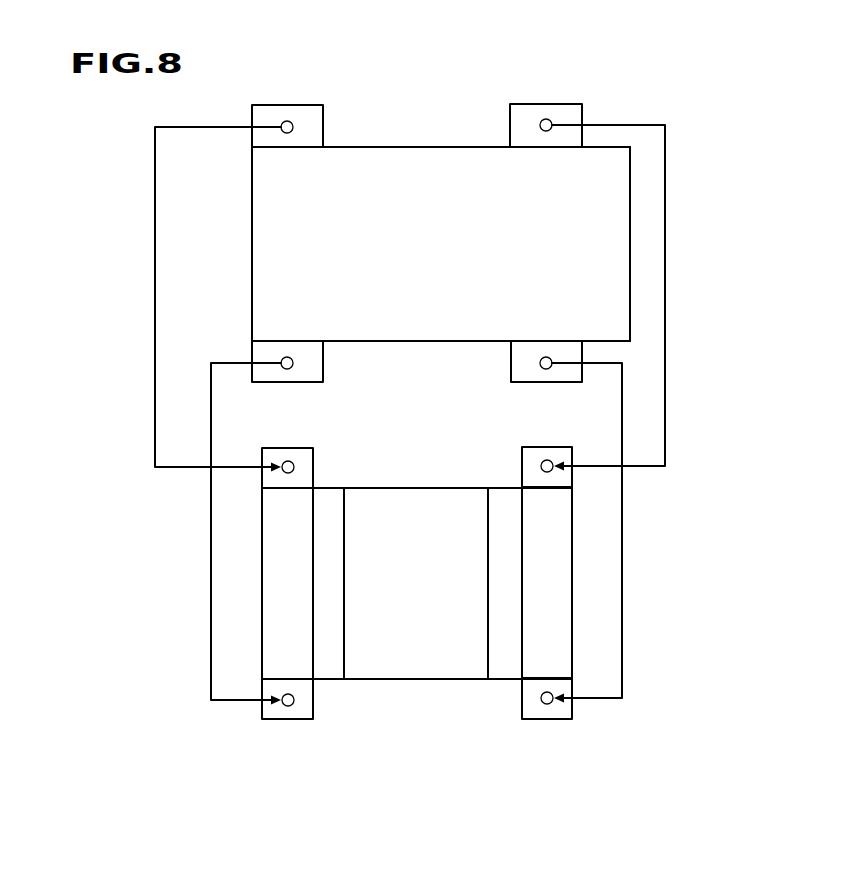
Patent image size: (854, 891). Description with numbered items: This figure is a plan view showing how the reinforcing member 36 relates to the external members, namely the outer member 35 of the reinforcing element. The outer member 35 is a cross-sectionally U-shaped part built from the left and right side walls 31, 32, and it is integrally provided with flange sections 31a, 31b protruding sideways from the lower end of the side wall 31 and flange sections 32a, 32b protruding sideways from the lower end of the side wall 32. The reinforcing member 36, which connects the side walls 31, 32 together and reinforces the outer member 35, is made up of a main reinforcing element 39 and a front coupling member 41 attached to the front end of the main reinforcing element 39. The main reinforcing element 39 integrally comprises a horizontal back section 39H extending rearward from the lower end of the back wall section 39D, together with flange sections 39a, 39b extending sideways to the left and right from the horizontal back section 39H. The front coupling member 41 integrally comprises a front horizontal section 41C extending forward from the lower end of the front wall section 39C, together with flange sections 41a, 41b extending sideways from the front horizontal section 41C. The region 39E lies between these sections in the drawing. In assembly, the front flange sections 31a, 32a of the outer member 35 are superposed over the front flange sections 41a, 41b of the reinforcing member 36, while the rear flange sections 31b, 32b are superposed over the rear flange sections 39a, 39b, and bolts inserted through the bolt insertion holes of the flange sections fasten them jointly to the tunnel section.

The side wall 31 is at (419, 352).
The flange section 31a is at (313, 364).
The flange section 31b is at (520, 362).
The side wall 32 is at (412, 138).
The flange section 32a is at (312, 117).
The flange section 32b is at (520, 117).
The outer member 35 is at (224, 228).
The reinforcing member 36 is at (244, 531).
The main reinforcing element 39 is at (580, 553).
The flange section 39a is at (522, 709).
The flange section 39b is at (530, 465).
The front wall section 39C is at (335, 562).
The back wall section 39D is at (508, 637).
The central element body 39E is at (418, 663).
The horizontal back section 39H is at (540, 592).
The front coupling member 41 is at (254, 593).
The flange section 41a is at (305, 709).
The flange section 41b is at (308, 465).
The front horizontal section 41C is at (280, 643).